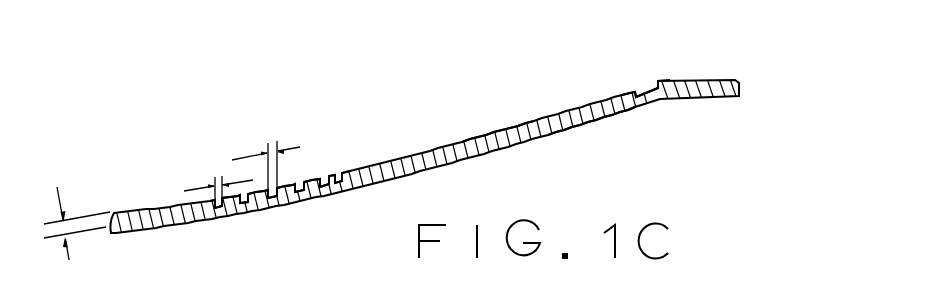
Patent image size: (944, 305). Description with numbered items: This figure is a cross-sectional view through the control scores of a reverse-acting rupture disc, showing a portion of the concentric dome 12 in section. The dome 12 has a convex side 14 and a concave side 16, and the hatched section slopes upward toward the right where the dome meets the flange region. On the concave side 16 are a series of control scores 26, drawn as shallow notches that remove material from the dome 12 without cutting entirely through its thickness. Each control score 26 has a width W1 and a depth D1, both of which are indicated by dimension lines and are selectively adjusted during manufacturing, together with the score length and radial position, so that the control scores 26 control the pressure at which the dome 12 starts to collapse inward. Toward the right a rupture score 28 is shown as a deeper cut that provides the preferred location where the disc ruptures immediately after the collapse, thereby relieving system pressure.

The dome 12 is at (481, 166).
The convex side 14 is at (600, 125).
The concave side 16 is at (497, 135).
The control score 26 is at (334, 131).
The rupture score 28 is at (647, 87).
The width W1 is at (243, 165).
The depth D1 is at (77, 211).